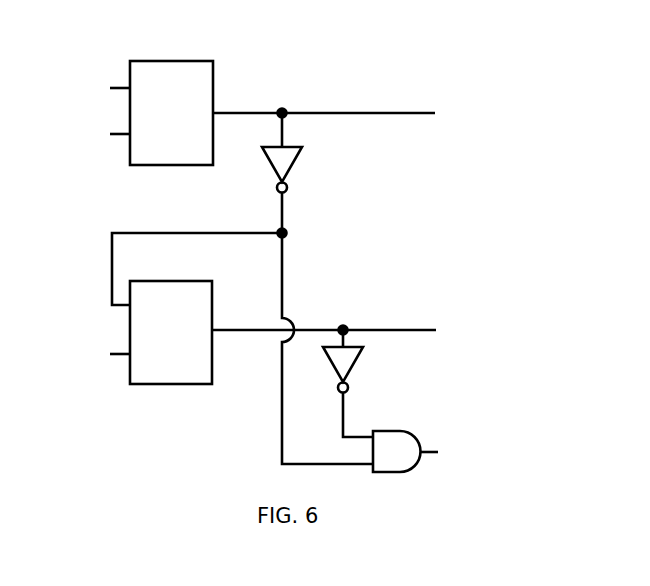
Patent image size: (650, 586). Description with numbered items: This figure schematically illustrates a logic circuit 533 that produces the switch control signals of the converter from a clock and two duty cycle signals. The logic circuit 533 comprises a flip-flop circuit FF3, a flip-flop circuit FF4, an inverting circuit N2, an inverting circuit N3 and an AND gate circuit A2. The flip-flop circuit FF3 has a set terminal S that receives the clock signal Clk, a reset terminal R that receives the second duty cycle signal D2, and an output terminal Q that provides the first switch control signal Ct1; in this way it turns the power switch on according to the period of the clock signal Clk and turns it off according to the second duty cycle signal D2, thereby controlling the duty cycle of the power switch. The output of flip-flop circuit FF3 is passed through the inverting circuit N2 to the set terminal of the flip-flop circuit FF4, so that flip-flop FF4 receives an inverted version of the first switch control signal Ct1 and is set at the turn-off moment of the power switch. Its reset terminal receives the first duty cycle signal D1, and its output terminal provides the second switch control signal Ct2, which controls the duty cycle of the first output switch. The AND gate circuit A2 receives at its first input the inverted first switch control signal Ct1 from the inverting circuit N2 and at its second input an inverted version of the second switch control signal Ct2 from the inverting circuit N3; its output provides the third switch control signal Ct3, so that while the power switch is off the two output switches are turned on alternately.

The logic circuit 533 is at (297, 239).
The flip-flop circuit FF3 is at (171, 99).
The flip-flop circuit FF4 is at (171, 320).
The inverting circuit N2 is at (298, 173).
The inverting circuit N3 is at (357, 383).
The AND gate circuit A2 is at (396, 438).
The clock signal Clk is at (103, 88).
The first duty cycle signal D1 is at (104, 354).
The second duty cycle signal D2 is at (103, 134).
The first switch control signal Ct1 is at (346, 114).
The second switch control signal Ct2 is at (345, 331).
The third switch control signal Ct3 is at (450, 452).